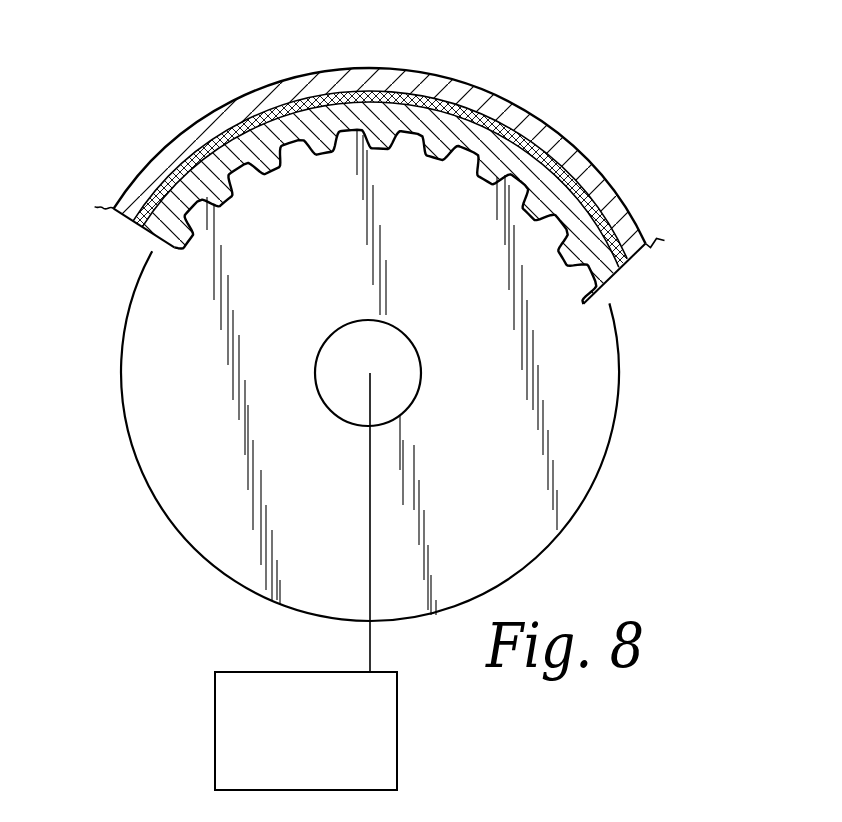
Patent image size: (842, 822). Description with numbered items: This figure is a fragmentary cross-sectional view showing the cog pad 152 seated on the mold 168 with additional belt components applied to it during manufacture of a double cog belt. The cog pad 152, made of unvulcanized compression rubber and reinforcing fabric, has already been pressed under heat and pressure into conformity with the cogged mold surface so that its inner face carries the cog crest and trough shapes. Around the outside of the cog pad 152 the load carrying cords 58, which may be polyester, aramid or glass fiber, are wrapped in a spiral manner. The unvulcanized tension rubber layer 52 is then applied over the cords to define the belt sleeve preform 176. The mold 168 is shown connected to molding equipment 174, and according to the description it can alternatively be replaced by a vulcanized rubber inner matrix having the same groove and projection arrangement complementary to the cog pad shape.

The tension rubber layer 52 is at (272, 86).
The load carrying cords 58 is at (140, 234).
The cog pad 152 is at (143, 248).
The mold 168 is at (570, 418).
The molding equipment 174 is at (283, 776).
The belt sleeve preform 176 is at (633, 262).